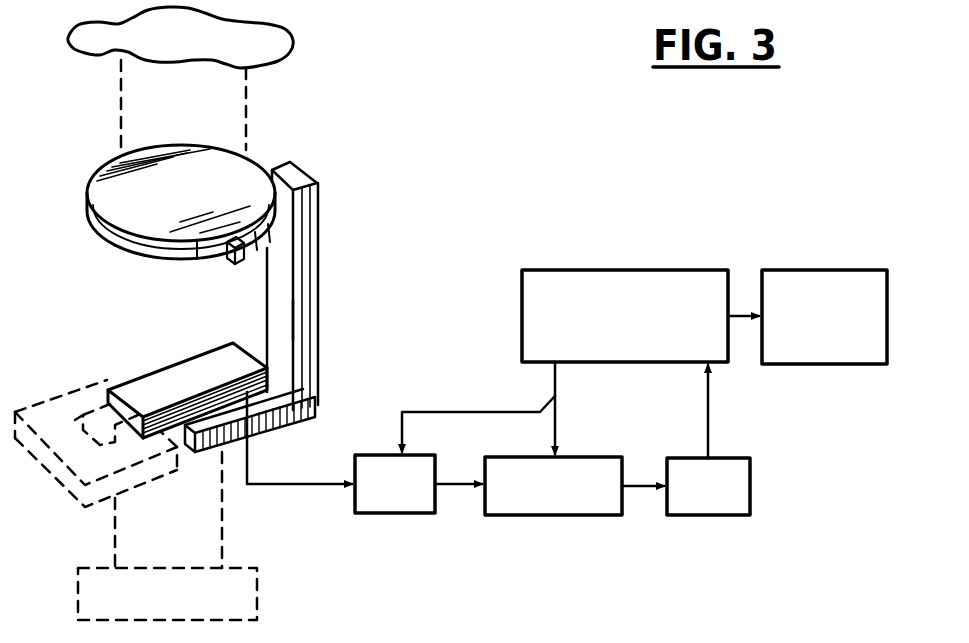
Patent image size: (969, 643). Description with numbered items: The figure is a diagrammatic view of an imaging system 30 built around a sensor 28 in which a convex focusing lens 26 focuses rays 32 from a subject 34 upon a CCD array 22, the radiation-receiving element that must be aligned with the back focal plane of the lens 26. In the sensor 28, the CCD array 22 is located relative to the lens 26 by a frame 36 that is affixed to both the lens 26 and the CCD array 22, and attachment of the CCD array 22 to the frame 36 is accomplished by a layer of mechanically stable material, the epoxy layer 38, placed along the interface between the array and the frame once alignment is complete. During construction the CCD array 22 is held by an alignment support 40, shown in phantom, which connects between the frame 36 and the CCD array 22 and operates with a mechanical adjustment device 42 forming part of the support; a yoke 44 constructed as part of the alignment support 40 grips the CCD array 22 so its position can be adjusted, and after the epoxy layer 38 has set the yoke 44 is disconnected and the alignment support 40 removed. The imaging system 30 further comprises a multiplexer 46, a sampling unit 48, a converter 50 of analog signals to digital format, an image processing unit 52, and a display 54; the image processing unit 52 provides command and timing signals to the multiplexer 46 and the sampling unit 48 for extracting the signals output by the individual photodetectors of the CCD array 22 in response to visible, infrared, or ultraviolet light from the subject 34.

The CCD array 22 is at (141, 381).
The convex focusing lens 26 is at (105, 171).
The sensor 28 is at (84, 279).
The imaging system 30 is at (326, 272).
The rays 32 is at (248, 130).
The subject 34 is at (293, 48).
The frame 36 is at (319, 318).
The epoxy layer 38 is at (300, 397).
The alignment support 40 is at (222, 537).
The mechanical adjustment device 42 is at (78, 583).
The yoke 44 is at (46, 392).
The multiplexer 46 is at (417, 513).
The sampling unit 48 is at (547, 515).
The converter 50 is at (698, 515).
The image processing unit 52 is at (630, 268).
The display 54 is at (797, 268).